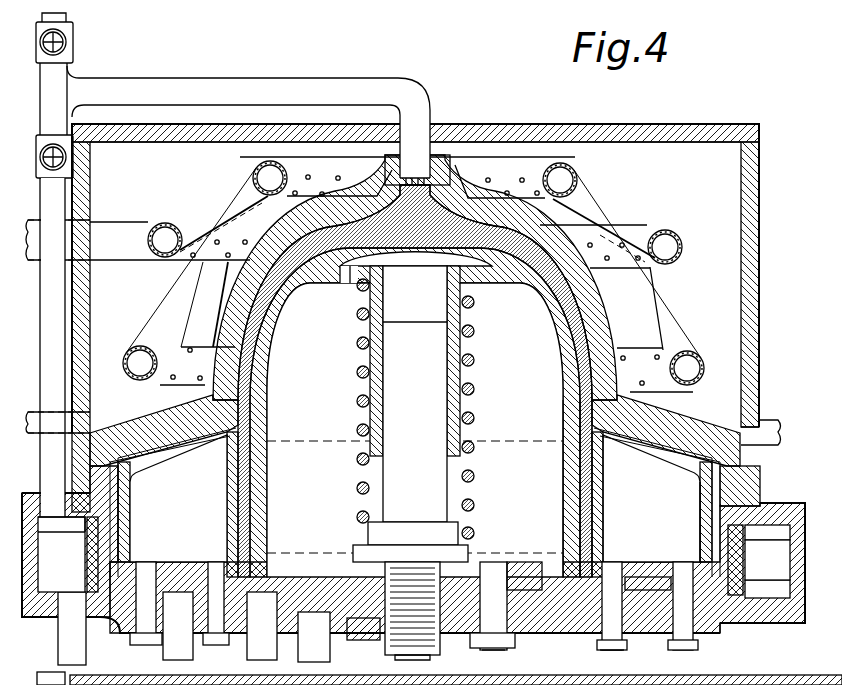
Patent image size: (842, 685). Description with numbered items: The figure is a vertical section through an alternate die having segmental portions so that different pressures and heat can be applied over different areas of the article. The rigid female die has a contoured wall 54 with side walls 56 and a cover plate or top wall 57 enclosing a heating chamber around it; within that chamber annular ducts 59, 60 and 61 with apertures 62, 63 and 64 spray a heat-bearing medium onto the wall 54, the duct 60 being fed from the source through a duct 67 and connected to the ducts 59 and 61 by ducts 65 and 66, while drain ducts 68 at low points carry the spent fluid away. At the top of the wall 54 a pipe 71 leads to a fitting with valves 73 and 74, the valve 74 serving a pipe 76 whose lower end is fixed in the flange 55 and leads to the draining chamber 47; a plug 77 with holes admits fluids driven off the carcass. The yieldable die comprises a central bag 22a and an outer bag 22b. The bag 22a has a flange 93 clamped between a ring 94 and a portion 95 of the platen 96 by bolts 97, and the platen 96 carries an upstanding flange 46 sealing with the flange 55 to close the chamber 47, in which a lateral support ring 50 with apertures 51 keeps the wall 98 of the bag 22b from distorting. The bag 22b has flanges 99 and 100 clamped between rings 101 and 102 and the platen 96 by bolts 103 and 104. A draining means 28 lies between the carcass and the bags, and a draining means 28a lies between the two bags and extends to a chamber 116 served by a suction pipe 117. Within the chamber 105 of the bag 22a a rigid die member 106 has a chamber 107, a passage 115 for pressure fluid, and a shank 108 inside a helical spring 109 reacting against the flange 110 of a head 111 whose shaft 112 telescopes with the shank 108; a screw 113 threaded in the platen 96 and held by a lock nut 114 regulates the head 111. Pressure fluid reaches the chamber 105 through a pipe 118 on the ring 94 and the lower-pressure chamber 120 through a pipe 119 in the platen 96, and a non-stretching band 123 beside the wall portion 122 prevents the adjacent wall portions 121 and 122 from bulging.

The central yieldable die part or bag 22a is at (553, 300).
The outer encircling die part or bag 22b is at (678, 470).
The draining means 28 is at (576, 278).
The draining means 28a is at (578, 455).
The upstanding flange 46 is at (790, 570).
The chamber 47 is at (788, 550).
The lateral support ring 50 is at (85, 538).
The apertures 51 is at (85, 552).
The contoured wall 54 is at (600, 330).
The flange 55 is at (768, 503).
The side walls 56 is at (86, 305).
The cover plate or top wall 57 is at (546, 126).
The annular duct 59 is at (320, 170).
The annular duct 60 is at (148, 241).
The annular duct 61 is at (123, 377).
The apertures 62 is at (296, 200).
The apertures 63 is at (220, 283).
The apertures 64 is at (183, 386).
The duct 65 is at (220, 192).
The duct 66 is at (170, 306).
The duct 67 is at (140, 220).
The outlet or drain ducts 68 is at (88, 414).
The duct or pipe 71 is at (262, 78).
The valve 73 is at (73, 42).
The valve 74 is at (73, 157).
The pipe or duct 76 is at (50, 335).
The plug 77 is at (655, 425).
The flange 93 is at (495, 562).
The ring 94 is at (540, 560).
The portion of platen 95 is at (505, 648).
The platen 96 is at (598, 644).
The bolts 97 is at (484, 640).
The wall 98 is at (695, 533).
The flange 99 is at (670, 648).
The flange 100 is at (626, 585).
The ring 101 is at (680, 562).
The ring 102 is at (612, 562).
The bolts 103 is at (606, 652).
The bolts 104 is at (718, 630).
The chamber 105 is at (300, 430).
The rigid die member 106 is at (452, 160).
The chamber 107 is at (420, 266).
The shank 108 is at (474, 372).
The helical spring 109 is at (472, 393).
The flange 110 is at (352, 552).
The head 111 is at (388, 532).
The shaft 112 is at (411, 492).
The screw 113 is at (438, 655).
The lock nut 114 is at (395, 660).
The passage 115 is at (350, 284).
The chamber 116 is at (228, 645).
The pipe or duct 117 is at (305, 660).
The duct or pipe 118 is at (368, 640).
The duct or pipe 119 is at (163, 644).
The chamber 120 is at (172, 528).
The wall portion 121 is at (576, 456).
The wall portion 122 is at (600, 447).
The lateral supporting ring or band 123 is at (600, 499).